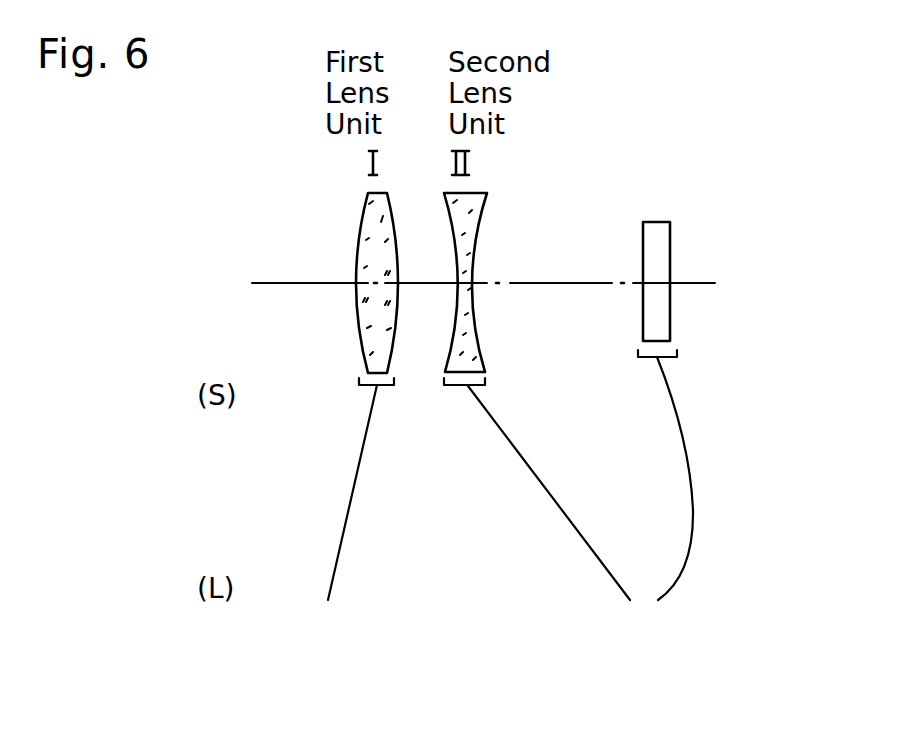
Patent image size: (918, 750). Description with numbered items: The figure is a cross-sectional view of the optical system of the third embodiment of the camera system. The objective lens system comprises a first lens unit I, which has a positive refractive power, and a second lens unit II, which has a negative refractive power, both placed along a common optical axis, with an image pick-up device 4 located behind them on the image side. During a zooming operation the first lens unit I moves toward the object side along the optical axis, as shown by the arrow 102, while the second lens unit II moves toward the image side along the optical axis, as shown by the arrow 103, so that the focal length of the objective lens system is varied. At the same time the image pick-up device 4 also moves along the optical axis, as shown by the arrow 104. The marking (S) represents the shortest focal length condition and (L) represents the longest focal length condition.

The arrow 102 is at (354, 495).
The arrow 103 is at (525, 455).
The arrow 104 is at (690, 453).
The image pick-up device 4 is at (660, 222).